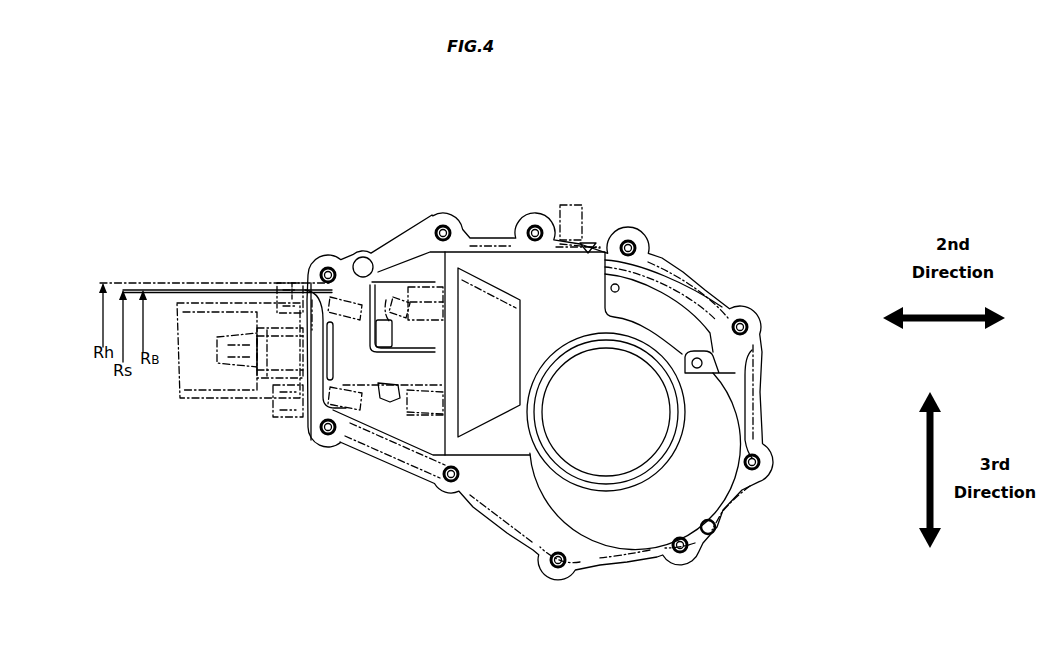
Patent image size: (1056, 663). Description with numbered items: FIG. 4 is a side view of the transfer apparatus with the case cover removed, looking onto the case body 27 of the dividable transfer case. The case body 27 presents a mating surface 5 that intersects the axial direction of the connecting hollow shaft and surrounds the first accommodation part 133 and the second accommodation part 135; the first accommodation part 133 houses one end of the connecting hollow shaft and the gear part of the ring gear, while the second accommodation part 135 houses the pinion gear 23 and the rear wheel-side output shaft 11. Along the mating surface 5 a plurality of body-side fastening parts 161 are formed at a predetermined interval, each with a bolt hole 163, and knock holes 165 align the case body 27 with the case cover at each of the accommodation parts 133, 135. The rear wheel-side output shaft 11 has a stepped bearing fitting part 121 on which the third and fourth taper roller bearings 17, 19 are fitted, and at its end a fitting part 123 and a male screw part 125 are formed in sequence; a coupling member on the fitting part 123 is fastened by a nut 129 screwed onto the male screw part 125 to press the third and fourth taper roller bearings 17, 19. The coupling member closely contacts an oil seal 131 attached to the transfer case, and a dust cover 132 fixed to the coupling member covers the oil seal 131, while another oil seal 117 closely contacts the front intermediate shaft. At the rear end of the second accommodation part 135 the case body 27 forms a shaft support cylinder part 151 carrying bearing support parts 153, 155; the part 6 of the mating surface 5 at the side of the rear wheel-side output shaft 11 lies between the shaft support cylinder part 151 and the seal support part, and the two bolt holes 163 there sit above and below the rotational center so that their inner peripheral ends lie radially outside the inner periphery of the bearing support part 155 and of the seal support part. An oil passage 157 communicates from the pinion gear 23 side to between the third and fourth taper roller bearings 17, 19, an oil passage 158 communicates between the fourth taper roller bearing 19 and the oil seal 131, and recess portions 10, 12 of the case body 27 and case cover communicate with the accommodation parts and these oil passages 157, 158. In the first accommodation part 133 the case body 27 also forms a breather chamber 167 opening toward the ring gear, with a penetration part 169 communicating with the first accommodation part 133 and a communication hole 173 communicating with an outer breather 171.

The mating surface 5 is at (660, 257).
The part of the mating surface 6 is at (330, 272).
The recess portion 10 is at (392, 356).
The rear wheel-side output shaft 11 is at (425, 316).
The recess portion 12 is at (420, 250).
The third taper roller bearing 17 is at (413, 292).
The fourth taper roller bearing 19 is at (345, 262).
The pinion gear 23 is at (484, 268).
The case body 27 is at (676, 260).
The oil seal 117 is at (180, 403).
The bearing fitting part 121 is at (362, 412).
The fitting part 123 is at (285, 300).
The male screw part 125 is at (237, 378).
The nut 129 is at (237, 373).
The oil seal 131 is at (280, 393).
The dust cover 132 is at (290, 422).
The first accommodation part 133 is at (708, 418).
The second accommodation part 135 is at (458, 242).
The shaft support cylinder part 151 is at (392, 300).
The bearing support part 153 is at (425, 400).
The bearing support part 155 is at (353, 420).
The oil passage 157 is at (392, 290).
The oil passage 158 is at (290, 287).
The body-side fastening parts 161 is at (318, 262).
The bolt holes 163 is at (328, 273).
The knock holes 165 is at (364, 266).
The breather chamber 167 is at (657, 307).
The penetration part 169 is at (687, 353).
The outer breather 171 is at (575, 205).
The communication hole 173 is at (590, 248).